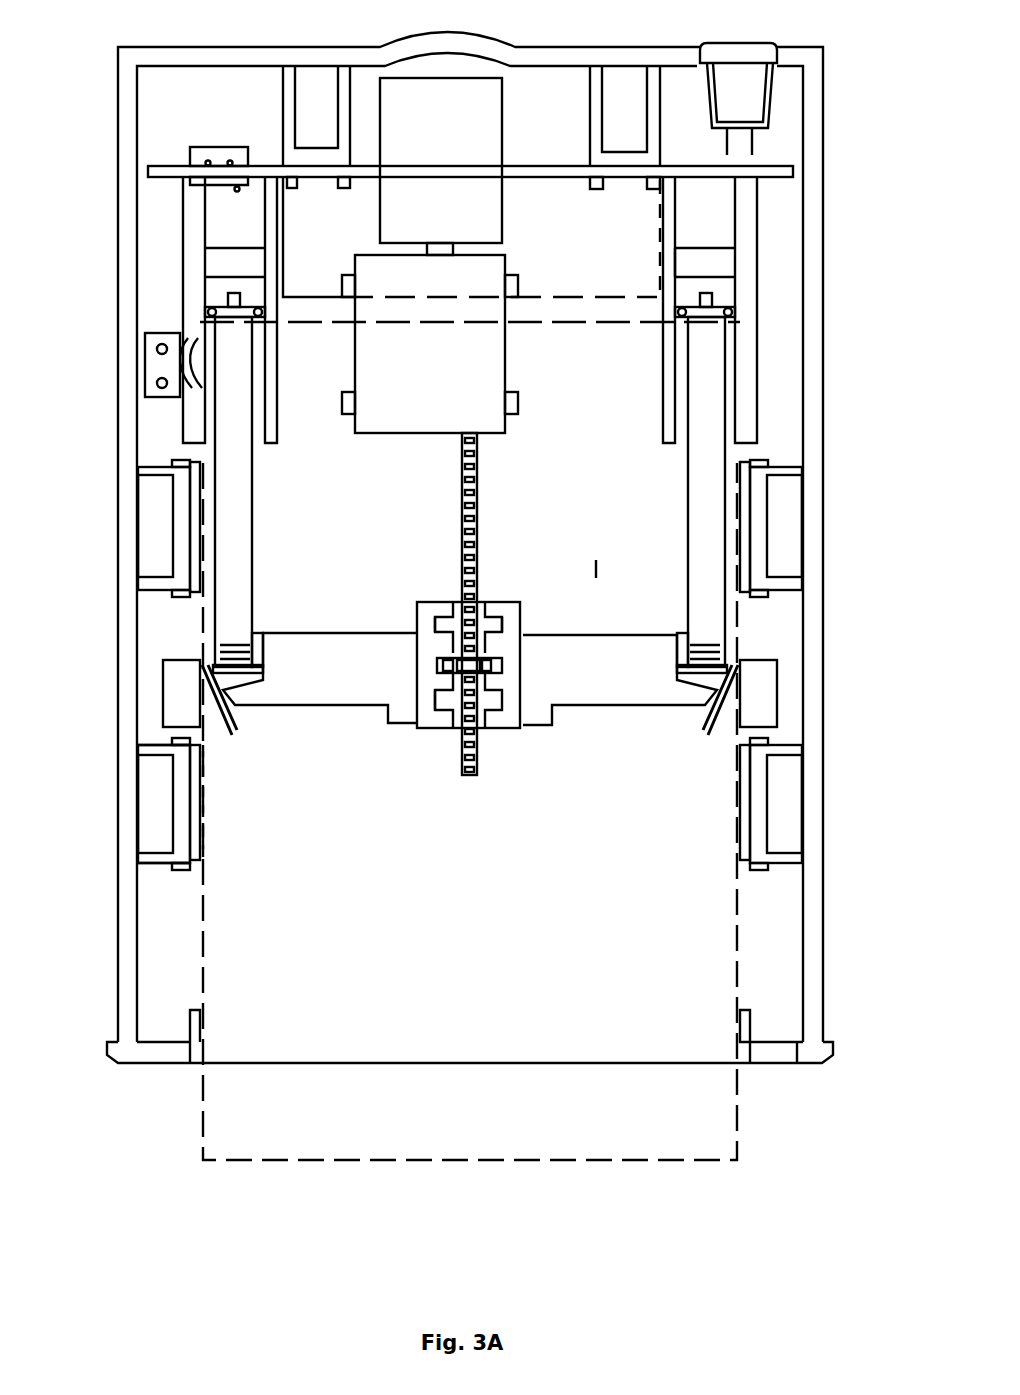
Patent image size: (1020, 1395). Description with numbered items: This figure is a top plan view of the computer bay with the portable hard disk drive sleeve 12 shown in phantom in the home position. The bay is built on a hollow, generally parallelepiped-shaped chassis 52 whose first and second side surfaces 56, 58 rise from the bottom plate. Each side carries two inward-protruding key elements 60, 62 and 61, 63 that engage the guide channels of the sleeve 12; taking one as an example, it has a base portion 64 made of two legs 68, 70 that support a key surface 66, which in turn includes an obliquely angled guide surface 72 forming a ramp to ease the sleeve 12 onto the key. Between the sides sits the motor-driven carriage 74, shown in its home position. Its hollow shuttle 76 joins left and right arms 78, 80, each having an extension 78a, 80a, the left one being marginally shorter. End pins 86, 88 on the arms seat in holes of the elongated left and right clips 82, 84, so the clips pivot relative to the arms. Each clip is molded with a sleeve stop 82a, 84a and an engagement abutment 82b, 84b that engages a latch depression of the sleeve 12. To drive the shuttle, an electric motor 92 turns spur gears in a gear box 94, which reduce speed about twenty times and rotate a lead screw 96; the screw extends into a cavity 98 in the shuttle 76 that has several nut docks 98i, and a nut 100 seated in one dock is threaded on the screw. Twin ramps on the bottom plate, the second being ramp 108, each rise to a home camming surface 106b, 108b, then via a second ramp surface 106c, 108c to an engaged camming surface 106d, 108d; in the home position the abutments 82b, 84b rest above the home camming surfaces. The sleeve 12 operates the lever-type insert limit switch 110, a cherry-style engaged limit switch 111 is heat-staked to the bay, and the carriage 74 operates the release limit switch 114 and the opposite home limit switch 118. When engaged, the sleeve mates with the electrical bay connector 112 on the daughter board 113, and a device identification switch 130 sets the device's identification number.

The portable hard disk drive sleeve 12 is at (745, 1148).
The chassis 52 is at (820, 806).
The first side surface 56 is at (120, 617).
The second side surface 58 is at (820, 617).
The key element 60 is at (172, 835).
The key element 61 is at (780, 868).
The key element 62 is at (173, 527).
The key element 63 is at (770, 527).
The base portion 64 is at (172, 795).
The key surface 66 is at (206, 793).
The leg 68 is at (160, 741).
The leg 70 is at (155, 868).
The guide surface 72 is at (206, 840).
The motor-driven carriage 74 is at (600, 570).
The shuttle 76 is at (440, 602).
The left arm 78 is at (318, 677).
The extension 78a is at (240, 702).
The right arm 80 is at (583, 677).
The extension 80a is at (695, 702).
The left clip 82 is at (240, 488).
The sleeve stop 82a is at (212, 311).
The engagement abutment 82b is at (240, 372).
The right clip 84 is at (700, 478).
The sleeve stop 84a is at (733, 320).
The engagement abutment 84b is at (712, 372).
The end pin 86 is at (262, 655).
The end pin 88 is at (683, 660).
The electric motor 92 is at (423, 220).
The gear box 94 is at (416, 385).
The lead screw 96 is at (479, 470).
The cavity 98 is at (490, 625).
The nut dock 98i is at (497, 668).
The nut 100 is at (447, 690).
The home camming surface 106b is at (225, 290).
The second ramp surface 106c is at (225, 262).
The engaged camming surface 106d is at (220, 198).
The ramp 108 is at (722, 228).
The home camming surface 108b is at (725, 292).
The second ramp surface 108c is at (723, 262).
The engaged camming surface 108d is at (715, 205).
The insert limit switch 110 is at (145, 366).
The engaged limit switch 111 is at (225, 147).
The electrical bay connector 112 is at (562, 248).
The daughter board 113 is at (795, 168).
The release limit switch 114 is at (165, 695).
The home limit switch 118 is at (762, 693).
The device identification switch 130 is at (748, 45).